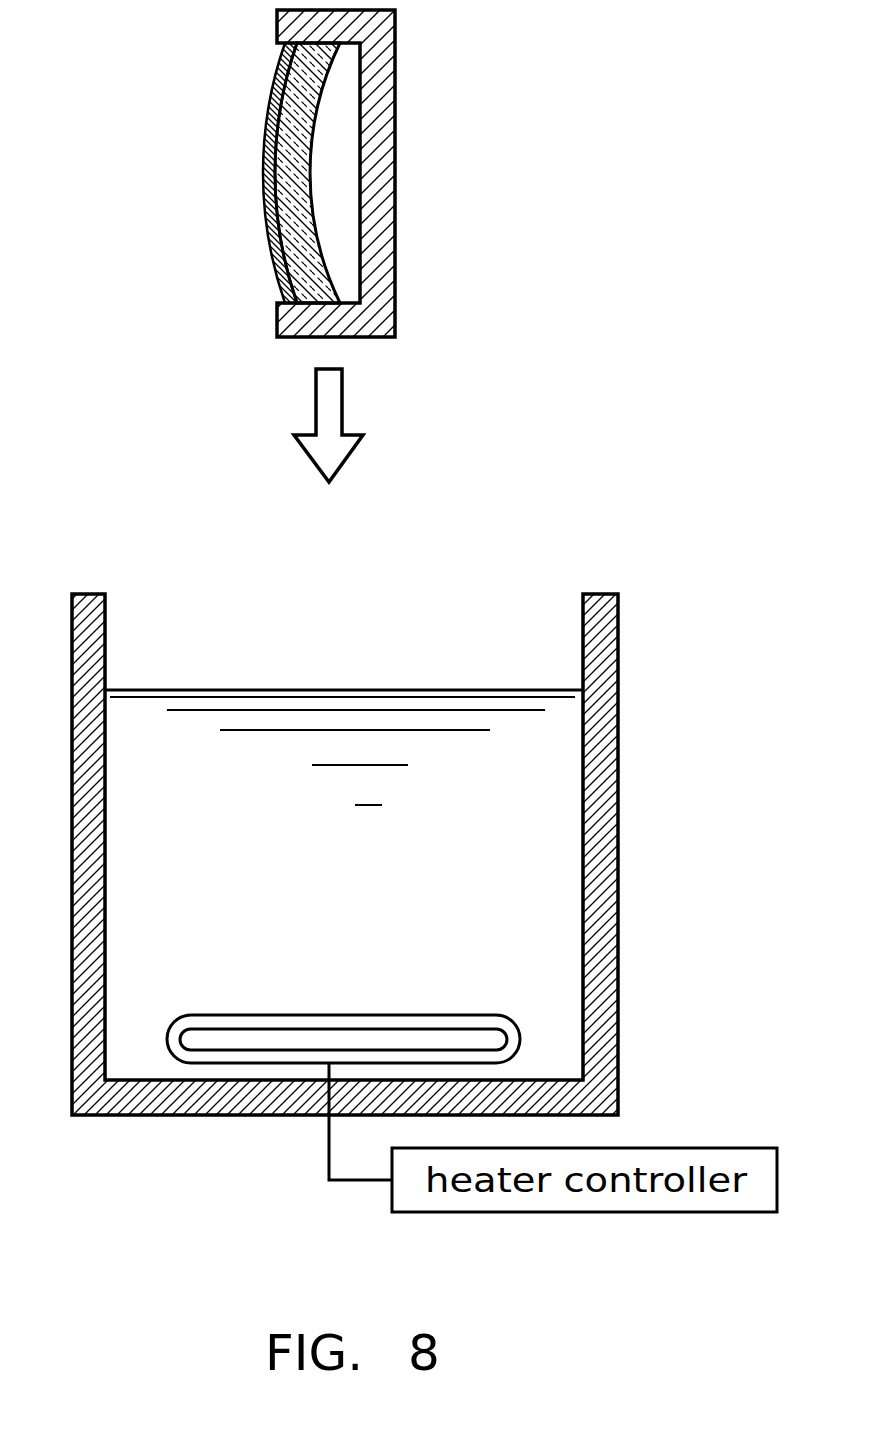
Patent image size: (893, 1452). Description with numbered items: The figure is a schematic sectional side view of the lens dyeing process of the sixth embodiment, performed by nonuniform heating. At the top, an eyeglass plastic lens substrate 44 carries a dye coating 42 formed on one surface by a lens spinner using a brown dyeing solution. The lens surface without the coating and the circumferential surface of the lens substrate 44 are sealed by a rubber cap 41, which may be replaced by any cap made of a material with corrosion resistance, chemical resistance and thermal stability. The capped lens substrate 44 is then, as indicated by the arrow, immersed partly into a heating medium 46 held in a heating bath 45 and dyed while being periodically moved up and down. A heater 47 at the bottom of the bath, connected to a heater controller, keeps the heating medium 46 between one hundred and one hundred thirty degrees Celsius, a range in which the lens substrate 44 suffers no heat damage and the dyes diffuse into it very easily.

The rubber cap 41 is at (395, 124).
The dye coating 42 is at (266, 139).
The lens substrate 44 is at (290, 222).
The heating bath 45 is at (618, 677).
The heating medium 46 is at (540, 900).
The heater 47 is at (515, 1020).